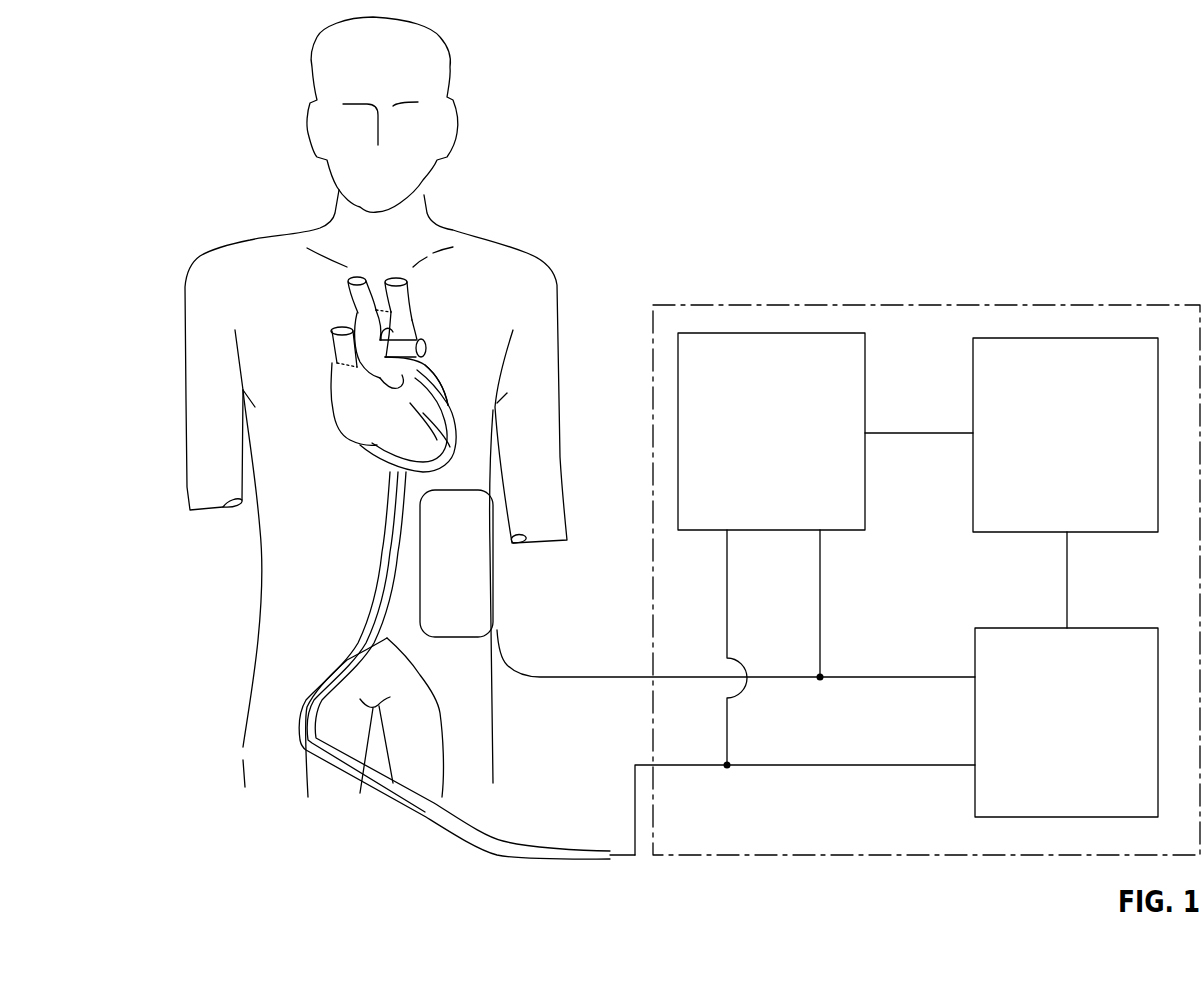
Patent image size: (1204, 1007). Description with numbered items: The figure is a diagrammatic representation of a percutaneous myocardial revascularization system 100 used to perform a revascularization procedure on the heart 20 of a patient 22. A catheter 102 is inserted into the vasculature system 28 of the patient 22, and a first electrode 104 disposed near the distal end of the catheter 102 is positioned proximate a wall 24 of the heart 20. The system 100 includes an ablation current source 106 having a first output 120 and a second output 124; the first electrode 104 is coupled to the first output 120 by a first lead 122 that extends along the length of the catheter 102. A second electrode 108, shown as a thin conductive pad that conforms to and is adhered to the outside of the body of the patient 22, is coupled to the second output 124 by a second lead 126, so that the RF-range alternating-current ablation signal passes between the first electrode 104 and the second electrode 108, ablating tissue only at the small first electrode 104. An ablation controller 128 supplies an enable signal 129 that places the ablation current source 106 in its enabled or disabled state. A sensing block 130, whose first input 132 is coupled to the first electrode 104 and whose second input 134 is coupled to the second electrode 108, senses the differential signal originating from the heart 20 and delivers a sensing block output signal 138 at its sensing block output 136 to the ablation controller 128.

The heart 20 is at (353, 397).
The patient 22 is at (472, 232).
The wall of the heart 24 is at (450, 417).
The vasculature system 28 is at (338, 526).
The percutaneous myocardial revascularization system 100 is at (849, 93).
The catheter 102 is at (497, 845).
The first electrode 104 is at (453, 440).
The ablation current source 106 is at (1108, 804).
The second electrode 108 is at (473, 580).
The first output 120 is at (960, 786).
The first lead 122 is at (633, 856).
The second output 124 is at (962, 668).
The second lead 126 is at (570, 677).
The ablation controller 128 is at (1088, 508).
The enable signal 129 is at (1070, 580).
The sensing block 130 is at (778, 493).
The first input 132 is at (716, 548).
The second input 134 is at (831, 550).
The sensing block output 136 is at (873, 425).
The sensing block output signal 138 is at (897, 437).